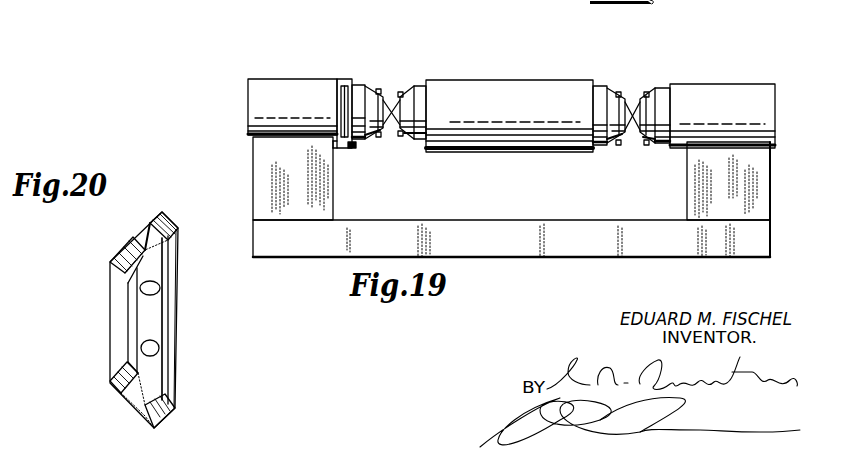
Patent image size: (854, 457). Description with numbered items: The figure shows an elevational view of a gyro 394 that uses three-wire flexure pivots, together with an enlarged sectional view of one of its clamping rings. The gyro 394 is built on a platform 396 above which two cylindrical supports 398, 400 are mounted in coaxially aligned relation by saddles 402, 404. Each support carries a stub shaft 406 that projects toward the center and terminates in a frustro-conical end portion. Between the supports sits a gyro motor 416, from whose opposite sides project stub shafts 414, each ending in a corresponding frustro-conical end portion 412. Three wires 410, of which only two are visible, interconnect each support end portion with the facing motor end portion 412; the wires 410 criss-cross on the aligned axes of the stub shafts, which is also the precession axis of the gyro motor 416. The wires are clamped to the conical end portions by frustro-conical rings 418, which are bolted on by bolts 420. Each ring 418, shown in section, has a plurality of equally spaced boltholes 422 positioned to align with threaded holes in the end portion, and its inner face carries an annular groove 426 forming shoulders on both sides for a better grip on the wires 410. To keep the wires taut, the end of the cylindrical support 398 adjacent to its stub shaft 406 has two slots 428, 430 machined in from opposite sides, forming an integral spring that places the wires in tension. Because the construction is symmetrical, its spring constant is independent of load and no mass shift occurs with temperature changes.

In FIG. 19, the gyro 394 is at (506, 68).
In FIG. 19, the platform 396 is at (487, 250).
In FIG. 19, the cylindrical support 398 is at (283, 83).
In FIG. 19, the cylindrical support 400 is at (728, 82).
In FIG. 19, the saddle 402 is at (335, 192).
In FIG. 19, the saddle 404 is at (697, 190).
In FIG. 19, the stub shaft 406 is at (358, 88).
In FIG. 19, the wires 410 is at (635, 122).
In FIG. 19, the frustro-conical end portion 412 is at (378, 106).
In FIG. 19, the stub shaft 414 is at (422, 110).
In FIG. 19, the gyro motor 416 is at (572, 88).
In FIG. 19, the frustro-conical ring 418 is at (652, 92).
In FIG. 20, the frustro-conical ring 418 is at (108, 386).
In FIG. 19, the bolts 420 is at (618, 93).
In FIG. 20, the boltholes 422 is at (137, 240).
In FIG. 20, the annular groove 426 is at (163, 377).
In FIG. 19, the slot 428 is at (353, 148).
In FIG. 19, the slot 430 is at (340, 93).